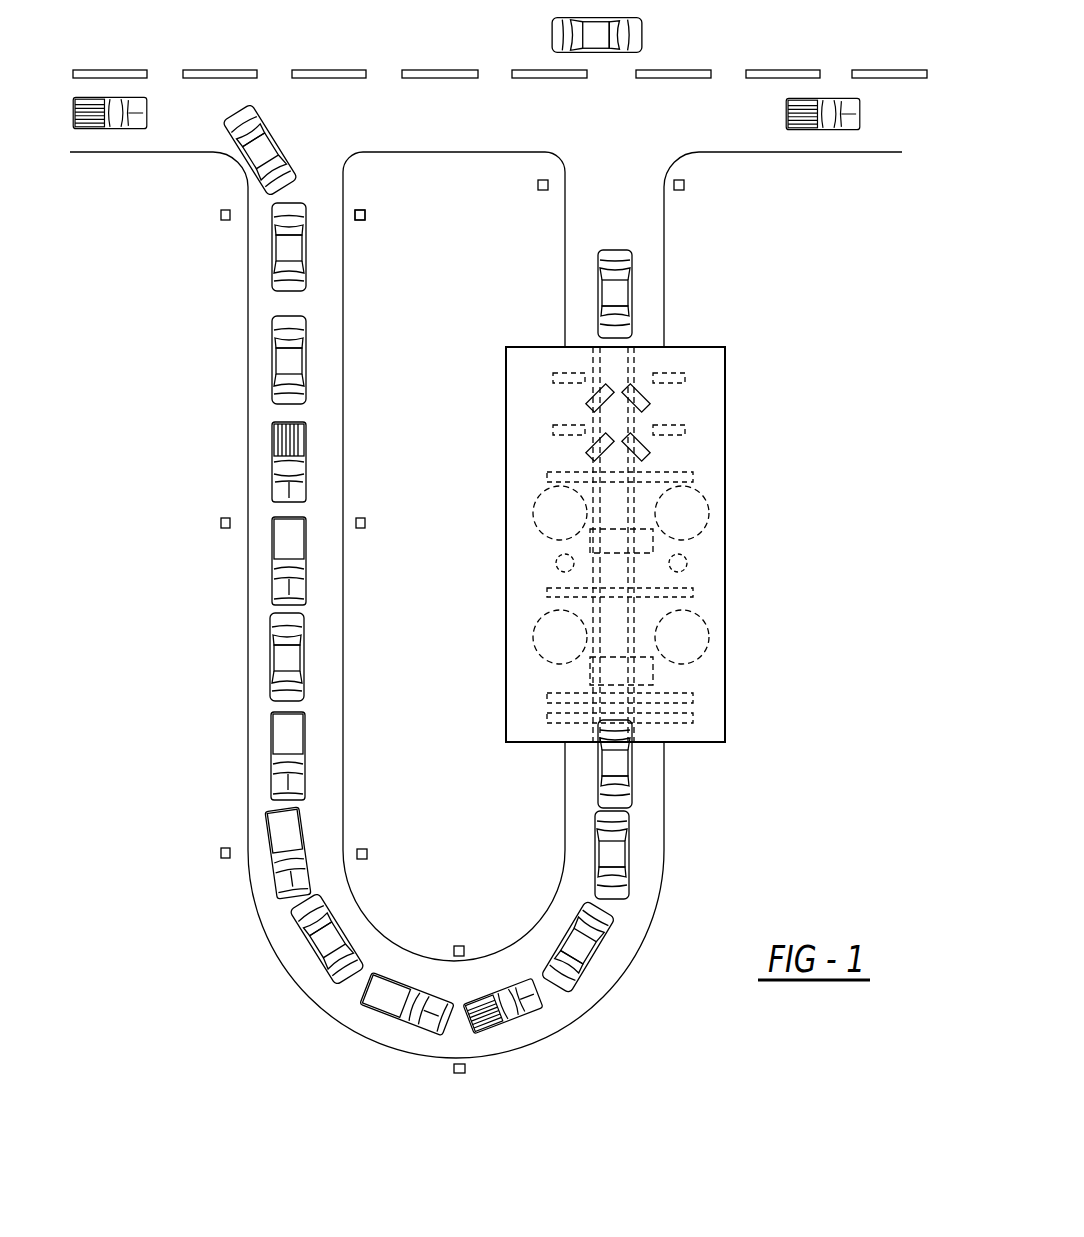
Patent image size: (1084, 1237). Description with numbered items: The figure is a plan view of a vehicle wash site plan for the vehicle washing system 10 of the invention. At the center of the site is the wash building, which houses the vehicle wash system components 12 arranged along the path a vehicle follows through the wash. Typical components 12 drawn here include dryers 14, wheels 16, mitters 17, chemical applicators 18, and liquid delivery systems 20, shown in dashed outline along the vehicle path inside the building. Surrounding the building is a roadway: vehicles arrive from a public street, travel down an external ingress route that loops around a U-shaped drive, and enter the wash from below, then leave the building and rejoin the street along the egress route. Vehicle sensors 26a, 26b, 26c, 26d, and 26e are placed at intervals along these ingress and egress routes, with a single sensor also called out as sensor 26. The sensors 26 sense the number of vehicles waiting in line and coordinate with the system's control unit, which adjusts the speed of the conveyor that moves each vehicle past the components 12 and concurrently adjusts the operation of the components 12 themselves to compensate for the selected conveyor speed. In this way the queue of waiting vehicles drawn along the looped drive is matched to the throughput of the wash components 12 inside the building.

The vehicle washing system 10 is at (778, 473).
The vehicle wash system component 12 is at (662, 399).
The dryers 14 is at (592, 400).
The wheels 16 is at (537, 503).
The mitters 17 is at (592, 545).
The chemical applicators 18 is at (555, 562).
The liquid delivery systems 20 is at (548, 697).
The sensors 26 is at (362, 198).
The vehicle sensor 26a is at (684, 185).
The vehicle sensor 26b is at (462, 945).
The vehicle sensor 26c is at (362, 848).
The vehicle sensor 26d is at (361, 517).
The vehicle sensor 26e is at (365, 215).